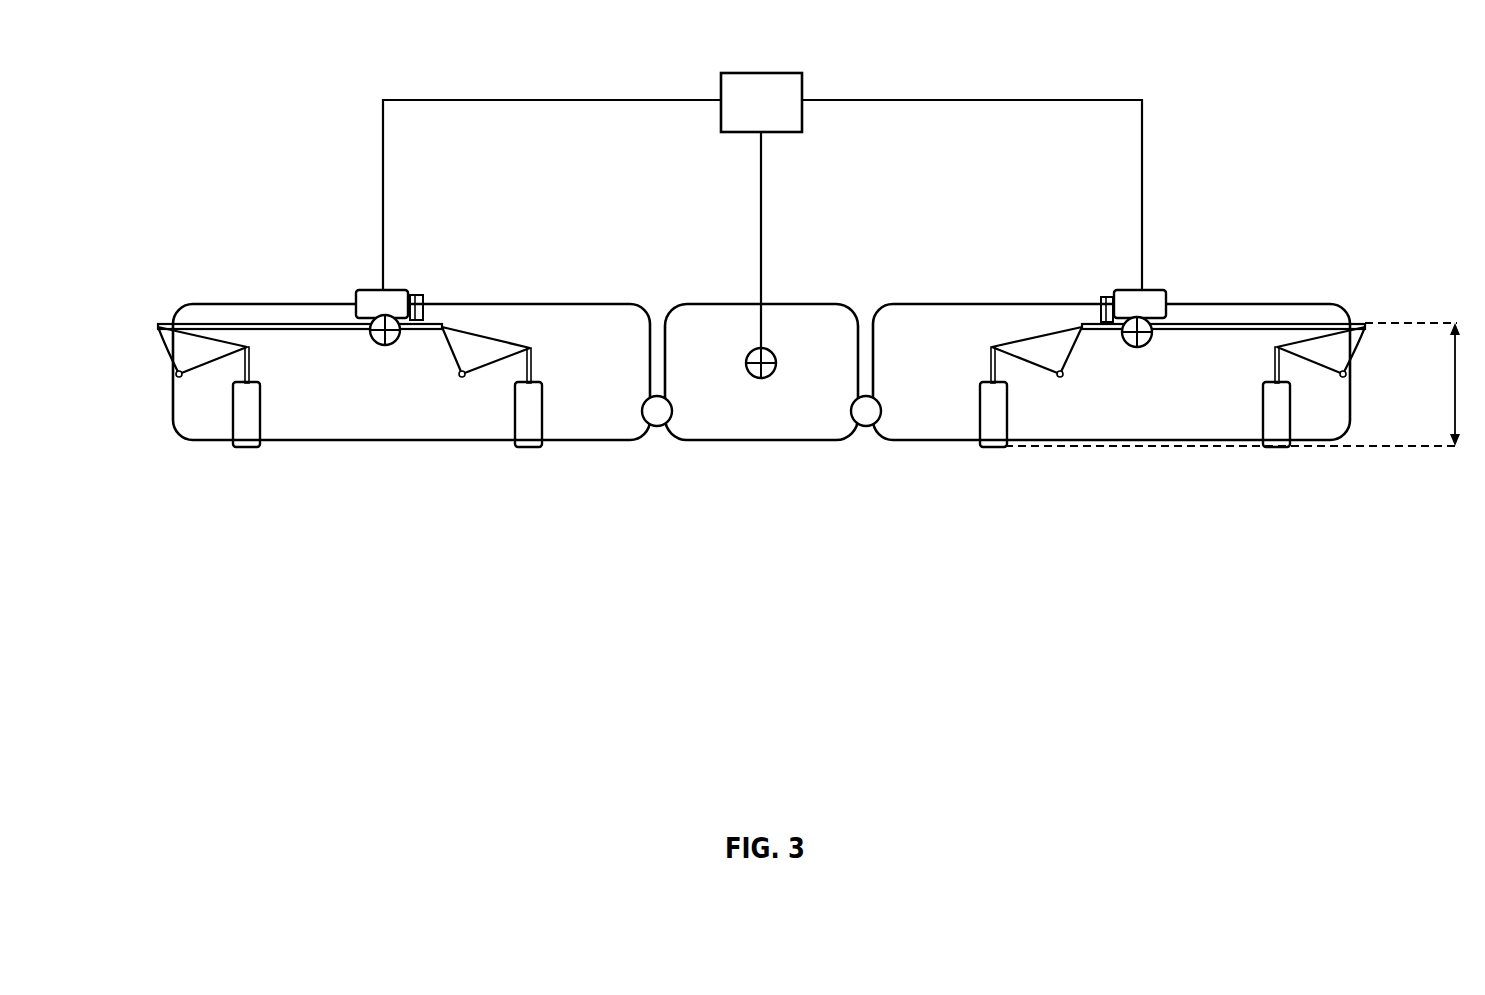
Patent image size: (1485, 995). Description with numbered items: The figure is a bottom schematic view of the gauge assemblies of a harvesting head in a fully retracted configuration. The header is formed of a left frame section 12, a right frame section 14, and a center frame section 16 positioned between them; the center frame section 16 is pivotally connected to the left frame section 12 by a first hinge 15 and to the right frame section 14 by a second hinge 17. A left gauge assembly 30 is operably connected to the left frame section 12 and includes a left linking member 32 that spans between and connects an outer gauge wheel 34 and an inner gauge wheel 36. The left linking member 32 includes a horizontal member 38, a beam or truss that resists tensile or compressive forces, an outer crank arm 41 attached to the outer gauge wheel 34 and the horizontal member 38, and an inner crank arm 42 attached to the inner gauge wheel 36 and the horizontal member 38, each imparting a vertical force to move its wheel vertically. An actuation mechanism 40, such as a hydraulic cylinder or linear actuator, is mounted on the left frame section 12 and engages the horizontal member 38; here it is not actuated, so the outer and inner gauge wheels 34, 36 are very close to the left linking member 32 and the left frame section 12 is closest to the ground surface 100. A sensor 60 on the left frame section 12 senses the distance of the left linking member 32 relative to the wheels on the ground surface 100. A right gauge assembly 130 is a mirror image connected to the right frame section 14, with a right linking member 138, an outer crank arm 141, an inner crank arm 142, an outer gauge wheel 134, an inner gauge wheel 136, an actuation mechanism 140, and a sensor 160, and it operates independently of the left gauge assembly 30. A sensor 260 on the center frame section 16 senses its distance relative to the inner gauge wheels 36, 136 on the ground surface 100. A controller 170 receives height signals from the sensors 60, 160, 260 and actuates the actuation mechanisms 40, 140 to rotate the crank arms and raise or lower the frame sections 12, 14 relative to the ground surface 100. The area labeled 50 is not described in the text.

The controller 170 is at (803, 78).
The right frame section 14 is at (186, 434).
The center frame section 16 is at (710, 442).
The left frame section 12 is at (1353, 407).
The second hinge 17 is at (652, 427).
The first hinge 15 is at (867, 427).
The sensor 260 is at (755, 348).
The right linking member 138 is at (226, 324).
The outer crank arm 141 is at (172, 342).
The outer gauge wheel 134 is at (250, 445).
The inner crank arm 142 is at (493, 345).
The inner gauge wheel 136 is at (525, 445).
The right gauge assembly 130 is at (359, 282).
The actuation mechanism 140 is at (412, 296).
The sensor 160 is at (372, 318).
The horizontal member 38 is at (1232, 277).
The left linking member 32 is at (1257, 293).
The inner crank arm 42 is at (1047, 345).
The inner gauge wheel 36 is at (993, 447).
The outer crank arm 41 is at (1350, 343).
The outer gauge wheel 34 is at (1278, 447).
The left gauge assembly 30 is at (1171, 274).
The actuation mechanism 40 is at (1127, 290).
The sensor 60 is at (1152, 322).
The ground surface 100 is at (1239, 421).
The tank bottom 50 is at (1108, 456).